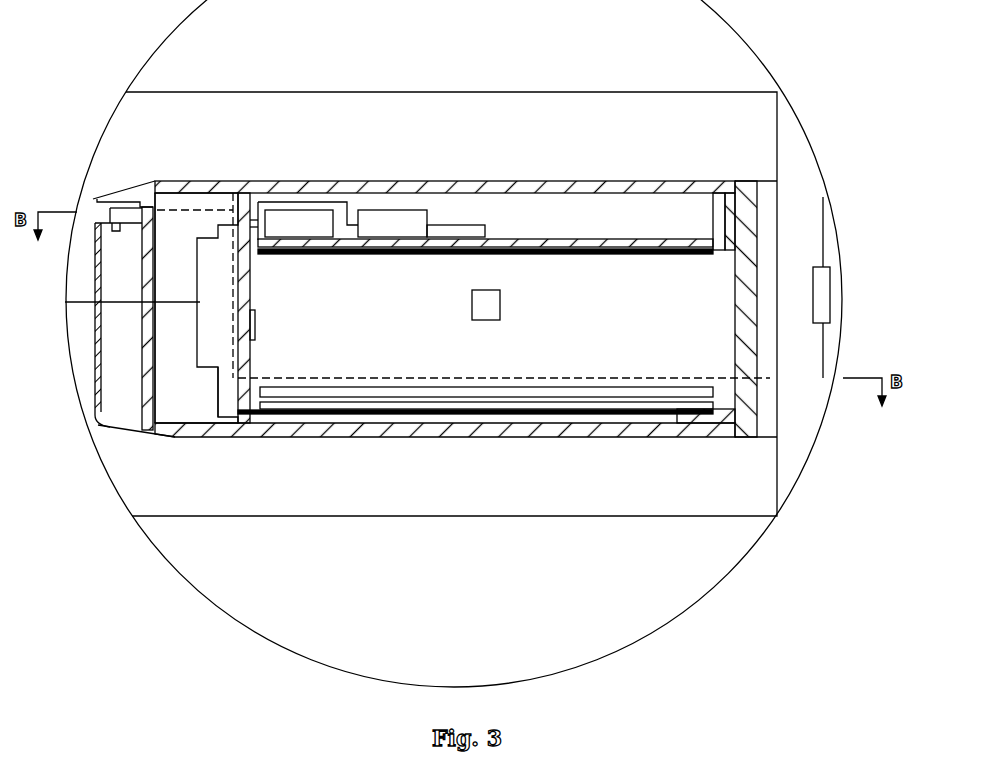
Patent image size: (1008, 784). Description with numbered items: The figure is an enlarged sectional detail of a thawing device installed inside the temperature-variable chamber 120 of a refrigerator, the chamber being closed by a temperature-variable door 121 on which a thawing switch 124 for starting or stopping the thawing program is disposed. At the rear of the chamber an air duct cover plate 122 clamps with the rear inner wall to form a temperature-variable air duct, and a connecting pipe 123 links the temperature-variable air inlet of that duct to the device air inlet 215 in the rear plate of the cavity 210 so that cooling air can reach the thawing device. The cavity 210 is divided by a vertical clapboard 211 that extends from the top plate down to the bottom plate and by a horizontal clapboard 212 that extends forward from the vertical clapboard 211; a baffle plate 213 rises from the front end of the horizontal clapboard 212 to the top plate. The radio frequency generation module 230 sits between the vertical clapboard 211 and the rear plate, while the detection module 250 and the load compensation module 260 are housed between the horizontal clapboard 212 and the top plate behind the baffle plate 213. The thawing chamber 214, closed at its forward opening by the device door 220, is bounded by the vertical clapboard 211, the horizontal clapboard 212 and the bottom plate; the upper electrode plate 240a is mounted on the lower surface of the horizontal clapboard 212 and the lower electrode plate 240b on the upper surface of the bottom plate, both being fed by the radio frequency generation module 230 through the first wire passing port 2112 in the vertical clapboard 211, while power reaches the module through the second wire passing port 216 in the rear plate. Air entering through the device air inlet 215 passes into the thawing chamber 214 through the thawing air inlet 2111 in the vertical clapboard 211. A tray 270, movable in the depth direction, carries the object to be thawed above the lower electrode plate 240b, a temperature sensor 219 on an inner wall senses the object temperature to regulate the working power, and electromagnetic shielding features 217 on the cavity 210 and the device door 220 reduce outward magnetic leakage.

The temperature-variable chamber 120 is at (768, 275).
The temperature-variable door 121 is at (805, 198).
The air duct cover plate 122 is at (95, 357).
The connecting pipe 123 is at (127, 214).
The thawing switch 124 is at (820, 305).
The cavity 210 is at (481, 183).
The vertical clapboard 211 is at (247, 300).
The thawing air inlet 2111 is at (247, 380).
The first wire passing port 2112 is at (243, 222).
The horizontal clapboard 212 is at (530, 241).
The baffle plate 213 is at (722, 194).
The thawing chamber 214 is at (713, 358).
The device air inlet 215 is at (148, 218).
The second wire passing port 216 is at (148, 307).
The electromagnetic shielding feature 217 is at (588, 192).
The temperature sensor 219 is at (257, 320).
The device door 220 is at (748, 397).
The radio frequency generation module 230 is at (223, 357).
The upper electrode plate 240a is at (617, 255).
The lower electrode plate 240b is at (645, 407).
The detection module 250 is at (310, 223).
The load compensation module 260 is at (388, 225).
The tray 270 is at (545, 388).